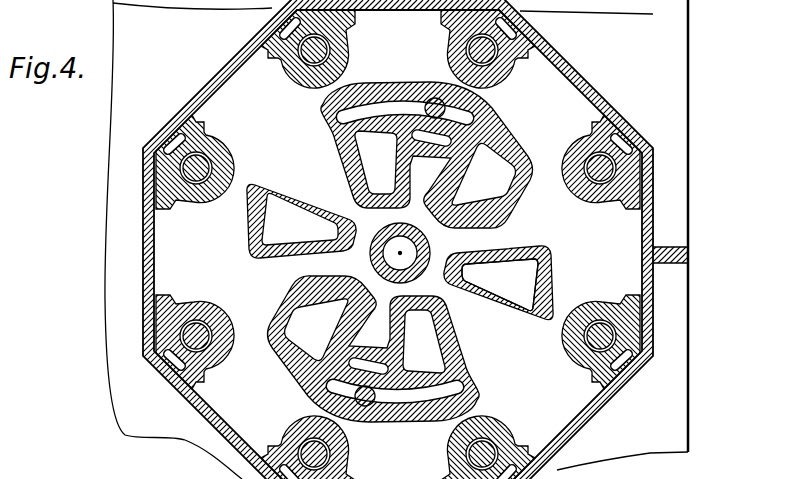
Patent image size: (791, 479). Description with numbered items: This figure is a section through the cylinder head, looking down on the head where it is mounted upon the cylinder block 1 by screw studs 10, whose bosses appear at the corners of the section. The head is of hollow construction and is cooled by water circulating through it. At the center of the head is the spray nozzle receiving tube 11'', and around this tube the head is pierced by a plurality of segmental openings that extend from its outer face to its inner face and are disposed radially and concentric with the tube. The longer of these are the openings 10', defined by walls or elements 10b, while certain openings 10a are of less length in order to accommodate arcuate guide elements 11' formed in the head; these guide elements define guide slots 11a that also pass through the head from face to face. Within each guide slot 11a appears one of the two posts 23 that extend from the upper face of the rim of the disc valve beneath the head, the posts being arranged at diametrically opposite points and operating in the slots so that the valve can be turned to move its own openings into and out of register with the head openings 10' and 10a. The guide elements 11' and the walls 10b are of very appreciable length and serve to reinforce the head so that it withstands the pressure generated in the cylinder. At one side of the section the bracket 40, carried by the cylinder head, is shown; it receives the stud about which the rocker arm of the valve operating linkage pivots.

The cylinder block 1 is at (686, 178).
The screw studs 10 is at (395, 239).
The segmental openings 10a is at (365, 152).
The elements defining openings 10b is at (577, 287).
The segmental openings 10' is at (533, 265).
The arcuate guide elements 11' is at (400, 247).
The spray nozzle receiving tube 11'' is at (395, 239).
The guide slots 11a is at (328, 112).
The posts 23 is at (447, 108).
The bracket 40 is at (687, 257).